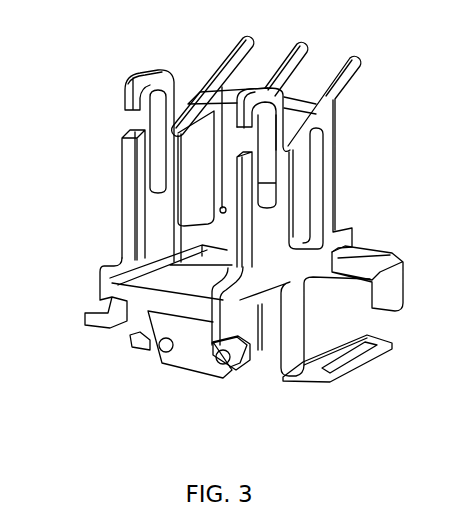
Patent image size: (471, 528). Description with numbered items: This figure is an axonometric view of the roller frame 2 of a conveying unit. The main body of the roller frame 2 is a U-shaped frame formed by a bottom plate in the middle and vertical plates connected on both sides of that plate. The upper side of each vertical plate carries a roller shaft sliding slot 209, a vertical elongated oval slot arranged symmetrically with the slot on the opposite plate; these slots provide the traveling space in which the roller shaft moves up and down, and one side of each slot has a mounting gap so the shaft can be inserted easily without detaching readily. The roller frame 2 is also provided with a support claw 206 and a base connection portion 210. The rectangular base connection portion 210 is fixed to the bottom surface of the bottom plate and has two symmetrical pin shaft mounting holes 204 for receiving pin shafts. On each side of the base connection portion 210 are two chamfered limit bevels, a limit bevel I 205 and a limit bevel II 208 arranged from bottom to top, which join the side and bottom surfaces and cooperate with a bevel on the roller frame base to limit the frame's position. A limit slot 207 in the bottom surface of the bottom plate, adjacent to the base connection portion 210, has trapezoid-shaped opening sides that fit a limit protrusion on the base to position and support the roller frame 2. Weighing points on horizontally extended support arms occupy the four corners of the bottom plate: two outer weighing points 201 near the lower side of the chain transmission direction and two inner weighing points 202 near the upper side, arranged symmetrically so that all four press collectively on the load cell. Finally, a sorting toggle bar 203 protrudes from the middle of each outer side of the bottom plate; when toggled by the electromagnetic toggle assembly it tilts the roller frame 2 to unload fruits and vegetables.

The roller frame 2 is at (90, 73).
The outer weighing point 201 is at (396, 299).
The inner weighing point 202 is at (214, 334).
The sorting toggle bar 203 is at (371, 360).
The pin shaft mounting hole 204 is at (218, 363).
The limit bevel I 205 is at (236, 369).
The support claw 206 is at (331, 97).
The limit slot 207 is at (190, 264).
The limit bevel II 208 is at (249, 357).
The roller shaft sliding slot 209 is at (269, 150).
The base connection portion 210 is at (160, 326).